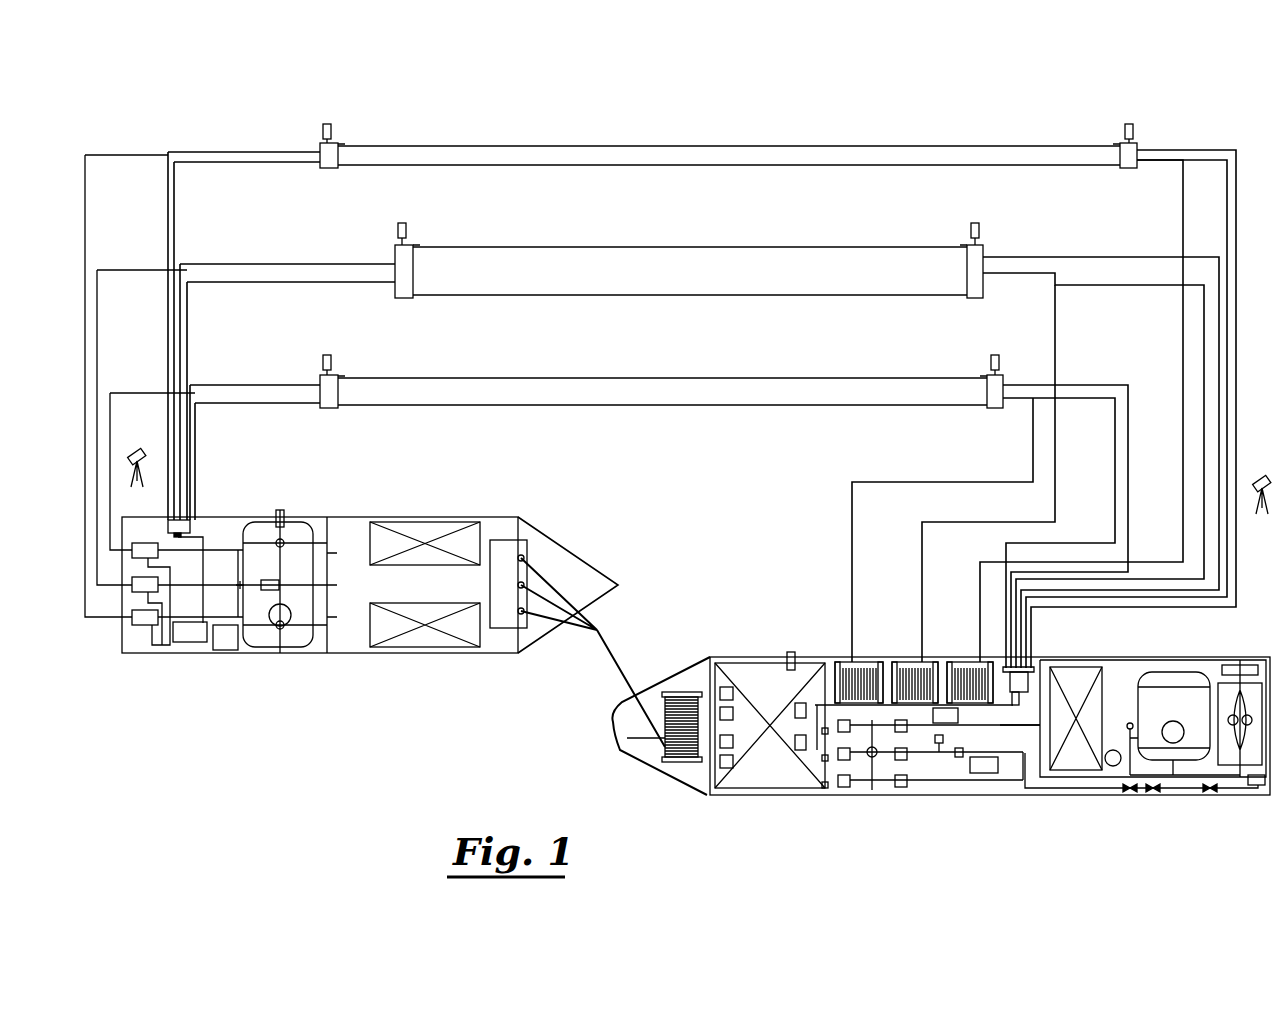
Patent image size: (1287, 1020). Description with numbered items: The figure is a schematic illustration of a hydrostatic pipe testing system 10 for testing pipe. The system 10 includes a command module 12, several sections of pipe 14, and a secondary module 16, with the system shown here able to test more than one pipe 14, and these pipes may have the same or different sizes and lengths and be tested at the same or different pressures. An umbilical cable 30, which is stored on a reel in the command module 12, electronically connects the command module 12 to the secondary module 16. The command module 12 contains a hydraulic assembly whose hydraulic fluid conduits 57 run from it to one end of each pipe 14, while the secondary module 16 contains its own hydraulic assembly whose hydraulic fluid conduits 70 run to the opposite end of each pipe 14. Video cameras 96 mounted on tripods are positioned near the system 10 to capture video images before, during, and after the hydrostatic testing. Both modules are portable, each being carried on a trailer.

The hydrostatic pipe testing system 10 is at (498, 725).
The command module 12 is at (1000, 810).
The pipe 14 is at (722, 138).
The secondary module 16 is at (285, 672).
The umbilical cable 30 is at (618, 660).
The hydraulic fluid conduits 57 is at (1210, 150).
The hydraulic fluid conduits 70 is at (207, 148).
The video cameras 96 is at (140, 448).